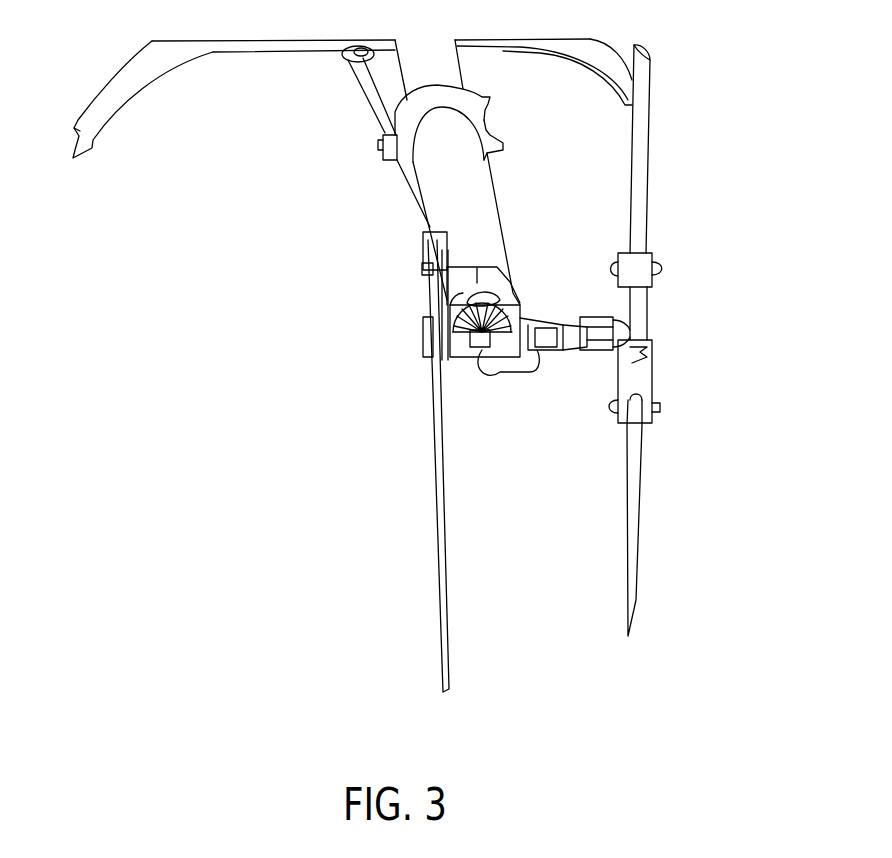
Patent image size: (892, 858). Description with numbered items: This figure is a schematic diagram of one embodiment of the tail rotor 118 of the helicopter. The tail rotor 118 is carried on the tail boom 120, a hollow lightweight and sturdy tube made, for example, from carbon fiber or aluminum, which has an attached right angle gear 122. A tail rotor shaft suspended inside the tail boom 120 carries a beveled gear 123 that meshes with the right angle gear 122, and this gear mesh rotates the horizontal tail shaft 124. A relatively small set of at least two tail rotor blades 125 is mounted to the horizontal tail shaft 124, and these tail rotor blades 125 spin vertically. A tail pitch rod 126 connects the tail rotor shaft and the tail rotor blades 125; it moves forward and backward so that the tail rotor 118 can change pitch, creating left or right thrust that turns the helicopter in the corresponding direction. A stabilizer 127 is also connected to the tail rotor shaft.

The tail rotor 118 is at (738, 266).
The tail boom 120 is at (490, 190).
The right angle gear 122 is at (469, 362).
The beveled gear 123 is at (505, 295).
The horizontal tail shaft 124 is at (543, 325).
The tail rotor blades 125 is at (648, 177).
The tail pitch rod 126 is at (358, 93).
The stabilizer 127 is at (432, 468).